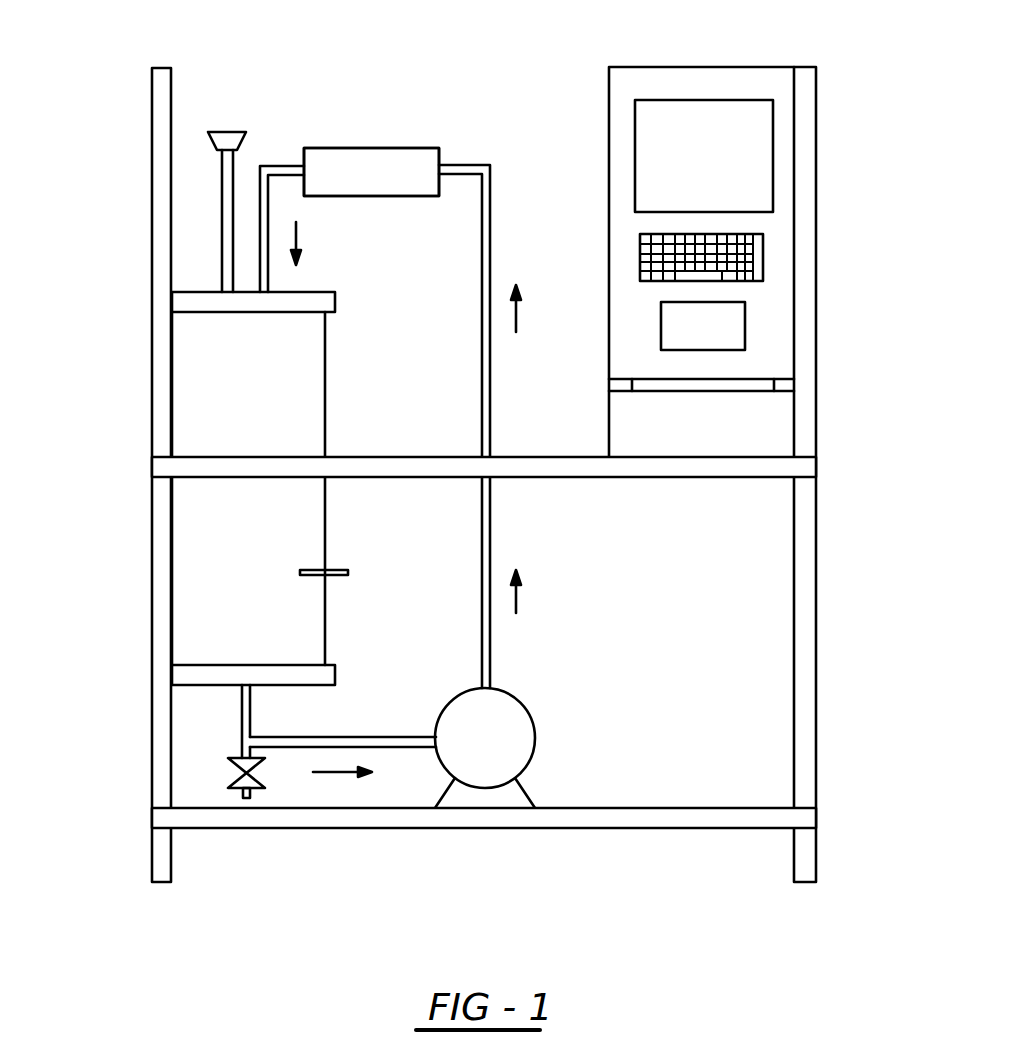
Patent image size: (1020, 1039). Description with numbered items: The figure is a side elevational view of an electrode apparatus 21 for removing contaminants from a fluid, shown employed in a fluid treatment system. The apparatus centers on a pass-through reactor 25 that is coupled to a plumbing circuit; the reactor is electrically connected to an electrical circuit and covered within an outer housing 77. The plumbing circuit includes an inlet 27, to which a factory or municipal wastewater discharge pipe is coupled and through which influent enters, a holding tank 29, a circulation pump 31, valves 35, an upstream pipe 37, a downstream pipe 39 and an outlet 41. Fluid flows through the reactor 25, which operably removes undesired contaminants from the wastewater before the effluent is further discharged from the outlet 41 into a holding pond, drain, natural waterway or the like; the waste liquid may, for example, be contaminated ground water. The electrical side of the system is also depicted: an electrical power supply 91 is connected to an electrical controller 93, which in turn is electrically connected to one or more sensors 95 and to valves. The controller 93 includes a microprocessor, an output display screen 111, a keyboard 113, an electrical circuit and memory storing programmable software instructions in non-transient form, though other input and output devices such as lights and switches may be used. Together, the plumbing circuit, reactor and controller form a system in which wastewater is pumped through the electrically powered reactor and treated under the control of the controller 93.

The electrode apparatus 21 is at (105, 836).
The pass-through reactor 25 is at (398, 185).
The inlet 27 is at (222, 132).
The holding tank 29 is at (274, 419).
The circulation pump 31 is at (511, 752).
The valves 35 is at (240, 758).
The upstream pipe 37 is at (490, 648).
The downstream pipe 39 is at (268, 209).
The outlet 41 is at (246, 798).
The outer housing 77 is at (407, 148).
The electrical power supply 91 is at (734, 442).
The electrical controller 93 is at (745, 327).
The sensors 95 is at (345, 568).
The output display screen 111 is at (773, 163).
The keyboard 113 is at (763, 258).